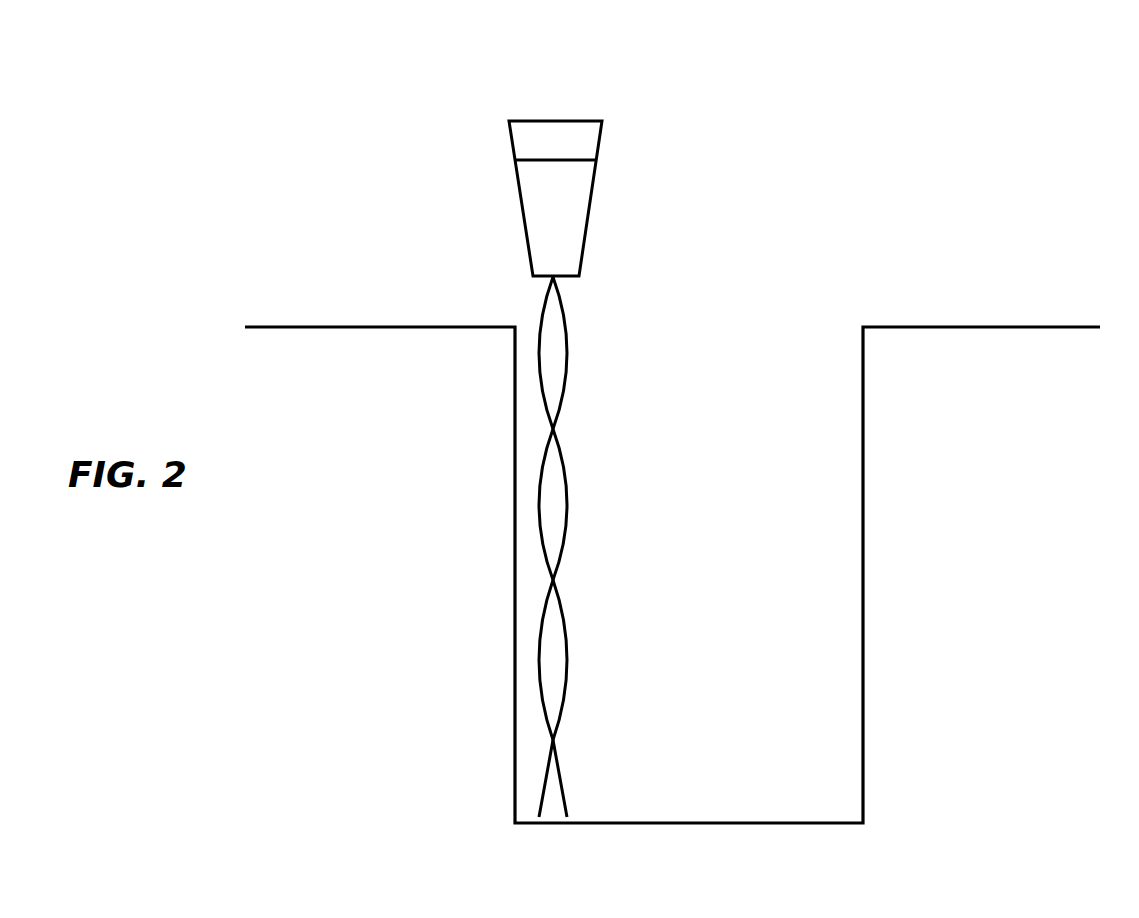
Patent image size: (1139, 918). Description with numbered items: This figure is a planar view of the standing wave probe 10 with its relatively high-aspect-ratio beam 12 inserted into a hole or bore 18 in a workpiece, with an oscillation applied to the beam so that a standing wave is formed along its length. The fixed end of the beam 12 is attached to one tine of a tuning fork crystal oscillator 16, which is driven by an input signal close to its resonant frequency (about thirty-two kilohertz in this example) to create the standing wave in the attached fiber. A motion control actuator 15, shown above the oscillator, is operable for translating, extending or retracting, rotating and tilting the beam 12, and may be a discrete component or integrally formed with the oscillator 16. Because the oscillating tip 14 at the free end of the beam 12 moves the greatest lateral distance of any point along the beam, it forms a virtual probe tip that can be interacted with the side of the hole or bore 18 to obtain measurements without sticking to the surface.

The standing wave probe 10 is at (633, 390).
The beam 12 is at (553, 578).
The oscillating tip 14 is at (578, 773).
The motion control actuator 15 is at (555, 118).
The tuning fork crystal oscillator 16 is at (590, 197).
The hole or bore 18 is at (810, 586).